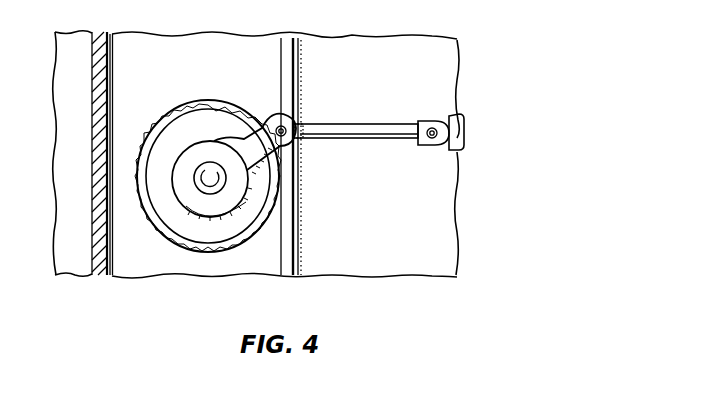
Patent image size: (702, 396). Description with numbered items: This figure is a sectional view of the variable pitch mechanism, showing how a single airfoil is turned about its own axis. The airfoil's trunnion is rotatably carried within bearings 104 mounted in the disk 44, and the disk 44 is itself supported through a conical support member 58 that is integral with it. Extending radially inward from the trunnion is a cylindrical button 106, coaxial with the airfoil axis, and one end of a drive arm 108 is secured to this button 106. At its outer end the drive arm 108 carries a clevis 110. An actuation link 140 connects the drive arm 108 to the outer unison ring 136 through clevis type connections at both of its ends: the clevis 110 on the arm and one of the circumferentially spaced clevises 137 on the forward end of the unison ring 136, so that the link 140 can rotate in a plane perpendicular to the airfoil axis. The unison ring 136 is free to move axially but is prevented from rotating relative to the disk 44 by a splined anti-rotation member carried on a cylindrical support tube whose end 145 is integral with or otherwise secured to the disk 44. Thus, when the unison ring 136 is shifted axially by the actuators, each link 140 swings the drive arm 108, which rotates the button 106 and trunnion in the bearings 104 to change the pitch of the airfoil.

The disk 44 is at (229, 68).
The conical support member 58 is at (98, 150).
The bearings 104 is at (196, 108).
The cylindrical button 106 is at (204, 177).
The drive arm 108 is at (253, 140).
The clevis 110 is at (282, 126).
The outer unison ring 136 is at (459, 118).
The clevises 137 is at (418, 146).
The actuation links 140 is at (352, 126).
The end of support tube 145 is at (386, 239).